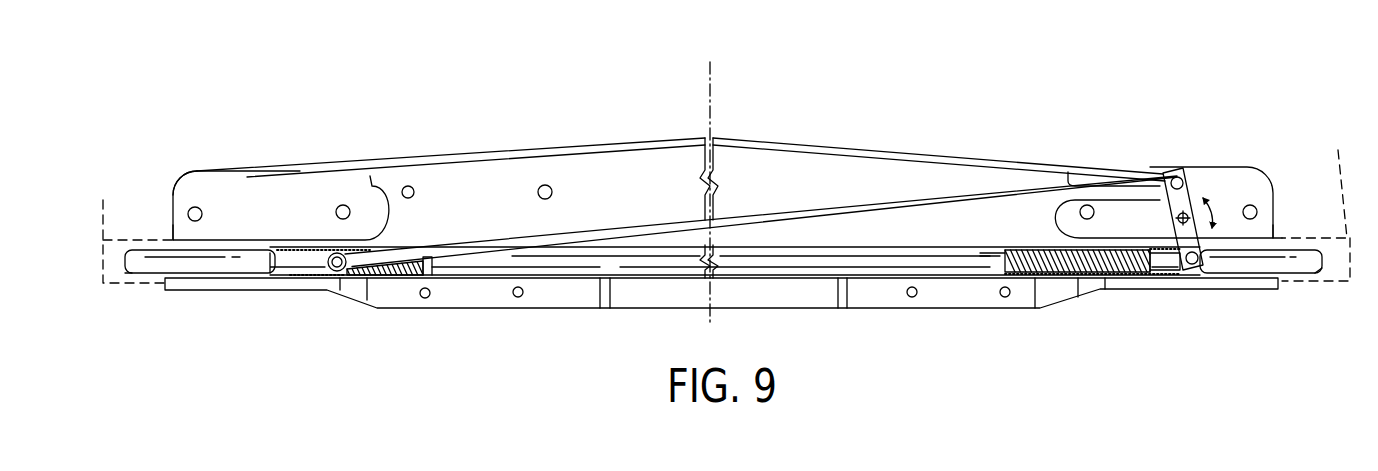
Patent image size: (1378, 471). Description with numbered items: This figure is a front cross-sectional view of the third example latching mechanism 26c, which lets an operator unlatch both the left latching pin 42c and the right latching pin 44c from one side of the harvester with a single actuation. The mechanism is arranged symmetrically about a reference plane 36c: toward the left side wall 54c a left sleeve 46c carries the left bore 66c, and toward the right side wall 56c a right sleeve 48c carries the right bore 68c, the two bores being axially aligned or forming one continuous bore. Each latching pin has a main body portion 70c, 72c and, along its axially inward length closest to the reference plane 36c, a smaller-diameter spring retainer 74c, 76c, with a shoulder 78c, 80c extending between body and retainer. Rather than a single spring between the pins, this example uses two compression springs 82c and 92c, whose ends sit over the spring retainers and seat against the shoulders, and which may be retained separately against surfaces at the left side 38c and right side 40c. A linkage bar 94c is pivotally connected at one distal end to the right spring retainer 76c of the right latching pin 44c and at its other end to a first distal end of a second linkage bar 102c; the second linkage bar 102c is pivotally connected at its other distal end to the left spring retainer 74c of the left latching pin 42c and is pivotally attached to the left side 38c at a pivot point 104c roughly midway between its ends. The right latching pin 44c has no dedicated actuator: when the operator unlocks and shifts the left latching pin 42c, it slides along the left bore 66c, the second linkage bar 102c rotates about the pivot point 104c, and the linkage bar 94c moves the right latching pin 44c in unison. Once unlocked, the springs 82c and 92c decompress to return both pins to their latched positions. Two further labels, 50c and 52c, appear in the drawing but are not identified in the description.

The latching mechanism 26c is at (138, 213).
The reference plane 36c is at (712, 108).
The left side 38c is at (908, 132).
The right side 40c is at (528, 133).
The left latching pin 42c is at (1308, 262).
The right latching pin 44c is at (148, 270).
The left sleeve 46c is at (1277, 237).
The right sleeve 48c is at (170, 240).
The second mounting region 50c is at (1320, 198).
The first mounting region 52c is at (126, 227).
The left side wall 54c is at (1272, 190).
The right side wall 56c is at (174, 200).
The left bore 66c is at (1035, 274).
The right bore 68c is at (300, 276).
The main body portion 70c is at (1265, 260).
The main body portion 72c is at (208, 268).
The left spring retainer 74c is at (1155, 260).
The right spring retainer 76c is at (312, 258).
The shoulder 78c is at (1168, 263).
The shoulder 80c is at (272, 256).
The helical compression spring 82c is at (1007, 263).
The spring 92c is at (403, 282).
The linkage bar 94c is at (750, 218).
The second linkage bar 102c is at (1172, 200).
The pivot point 104c is at (1183, 213).